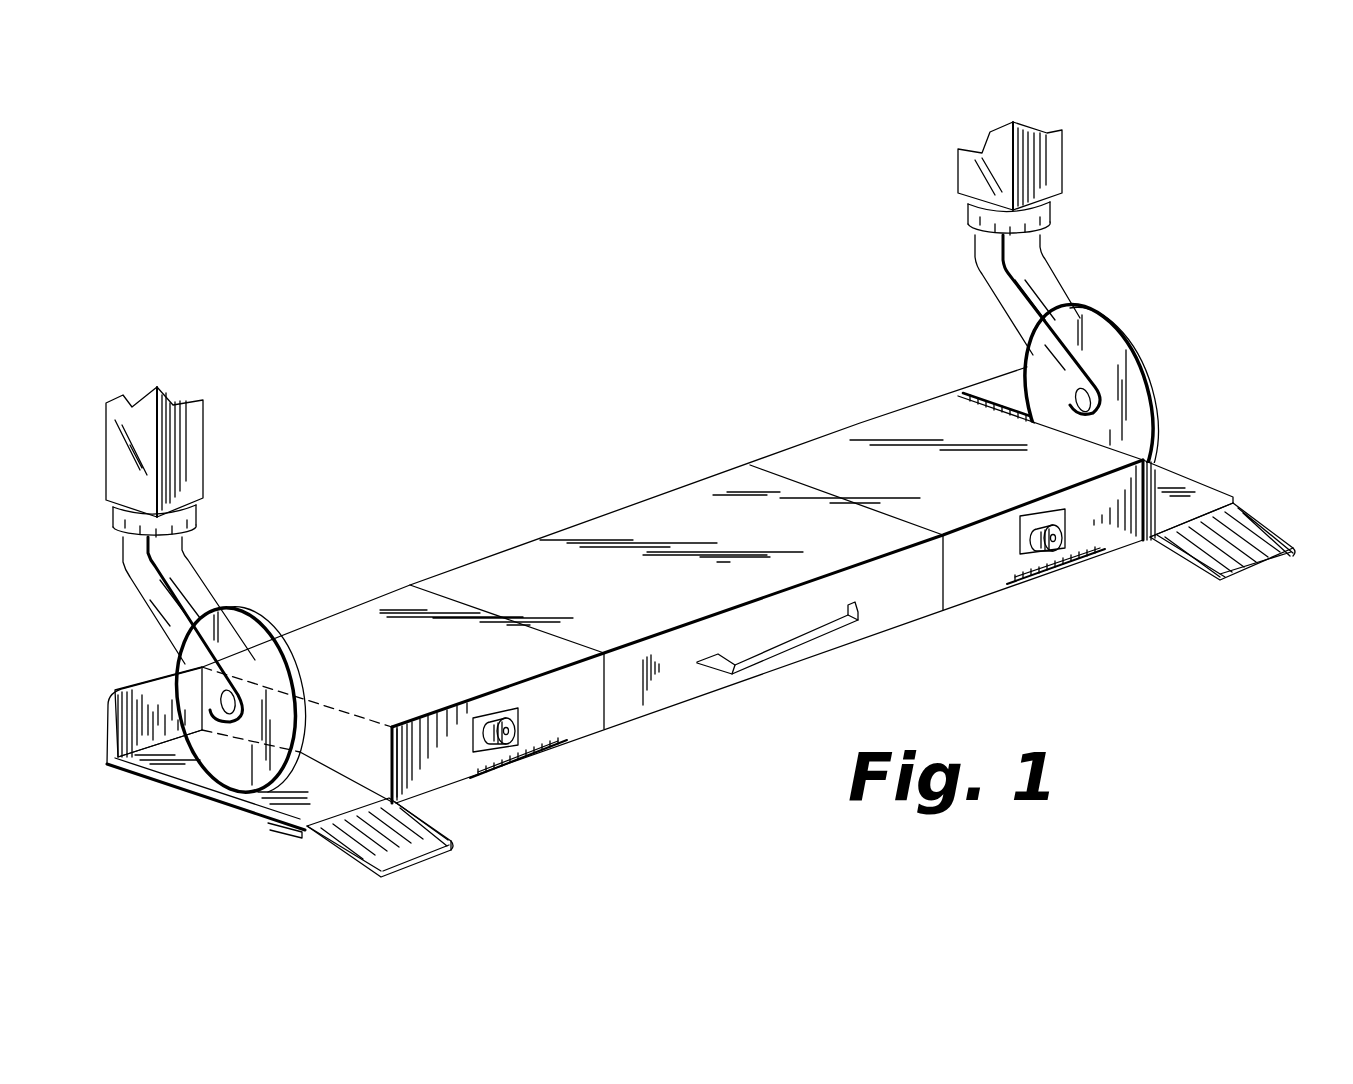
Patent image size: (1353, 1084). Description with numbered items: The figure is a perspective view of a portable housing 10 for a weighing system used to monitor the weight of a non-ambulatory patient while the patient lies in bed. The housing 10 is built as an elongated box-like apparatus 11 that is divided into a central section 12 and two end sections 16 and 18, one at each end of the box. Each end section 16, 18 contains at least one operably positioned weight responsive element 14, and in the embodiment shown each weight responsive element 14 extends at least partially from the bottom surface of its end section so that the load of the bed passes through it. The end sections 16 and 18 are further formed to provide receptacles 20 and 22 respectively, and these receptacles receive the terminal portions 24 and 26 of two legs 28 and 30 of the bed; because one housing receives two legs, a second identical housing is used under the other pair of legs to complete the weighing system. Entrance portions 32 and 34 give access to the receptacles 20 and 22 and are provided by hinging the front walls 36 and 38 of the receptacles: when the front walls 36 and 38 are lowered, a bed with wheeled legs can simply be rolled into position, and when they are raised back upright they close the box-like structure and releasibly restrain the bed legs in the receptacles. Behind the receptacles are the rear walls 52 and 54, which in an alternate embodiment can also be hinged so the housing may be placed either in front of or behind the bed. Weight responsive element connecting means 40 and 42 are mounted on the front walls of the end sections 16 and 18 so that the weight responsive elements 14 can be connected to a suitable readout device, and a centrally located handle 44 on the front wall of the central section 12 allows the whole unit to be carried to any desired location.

The portable housing 10 is at (620, 462).
The elongated box-like apparatus 11 is at (440, 518).
The central section 12 is at (538, 532).
The weight responsive element 14 is at (512, 767).
The end section 16 is at (164, 752).
The end section 18 is at (1105, 435).
The receptacle 20 is at (226, 782).
The receptacle 22 is at (1205, 495).
The terminal portion 24 is at (148, 663).
The terminal portion 26 is at (1135, 345).
The leg 28 is at (196, 440).
The leg 30 is at (1060, 172).
The entrance portion 32 is at (368, 850).
The entrance portion 34 is at (1243, 550).
The front wall 36 is at (427, 862).
The front wall 38 is at (1258, 564).
The weight responsive element connecting means 40 is at (500, 716).
The weight responsive element connecting means 42 is at (1047, 522).
The handle 44 is at (770, 648).
The rear wall 52 is at (108, 740).
The rear wall 54 is at (1005, 375).